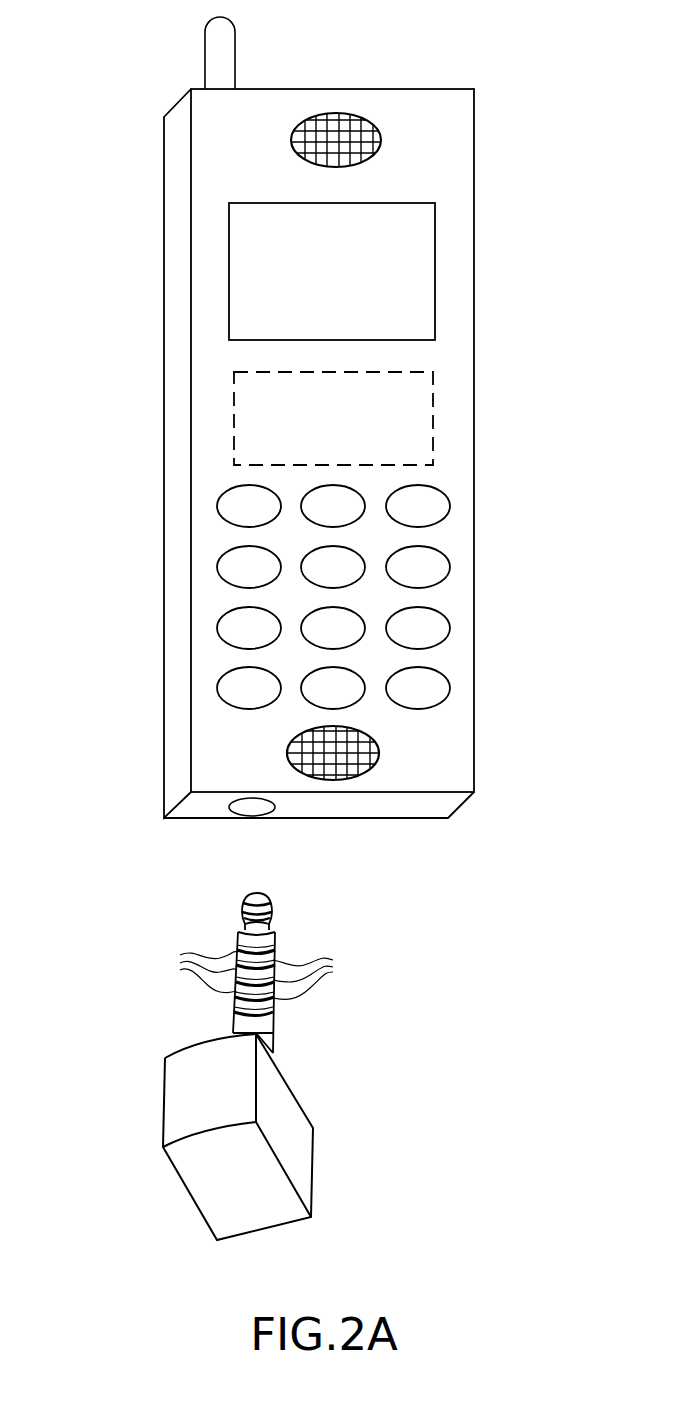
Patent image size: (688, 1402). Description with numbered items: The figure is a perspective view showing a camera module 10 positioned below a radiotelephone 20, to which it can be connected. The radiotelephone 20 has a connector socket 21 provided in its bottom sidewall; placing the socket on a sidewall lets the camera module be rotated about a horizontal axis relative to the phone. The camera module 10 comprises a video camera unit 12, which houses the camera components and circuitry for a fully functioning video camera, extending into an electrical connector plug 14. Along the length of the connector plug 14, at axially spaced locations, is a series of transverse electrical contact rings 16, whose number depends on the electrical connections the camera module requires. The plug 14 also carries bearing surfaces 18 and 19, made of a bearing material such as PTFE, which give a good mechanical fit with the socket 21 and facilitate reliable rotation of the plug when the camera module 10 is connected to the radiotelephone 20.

The camera module 10 is at (124, 1163).
The video camera unit 12 is at (270, 1227).
The electrical connector plug 14 is at (300, 1026).
The electrical contact rings 16 is at (192, 971).
The bearing surface 18 is at (273, 1043).
The bearing surface 19 is at (318, 977).
The radiotelephone 20 is at (458, 73).
The connector socket 21 is at (244, 815).